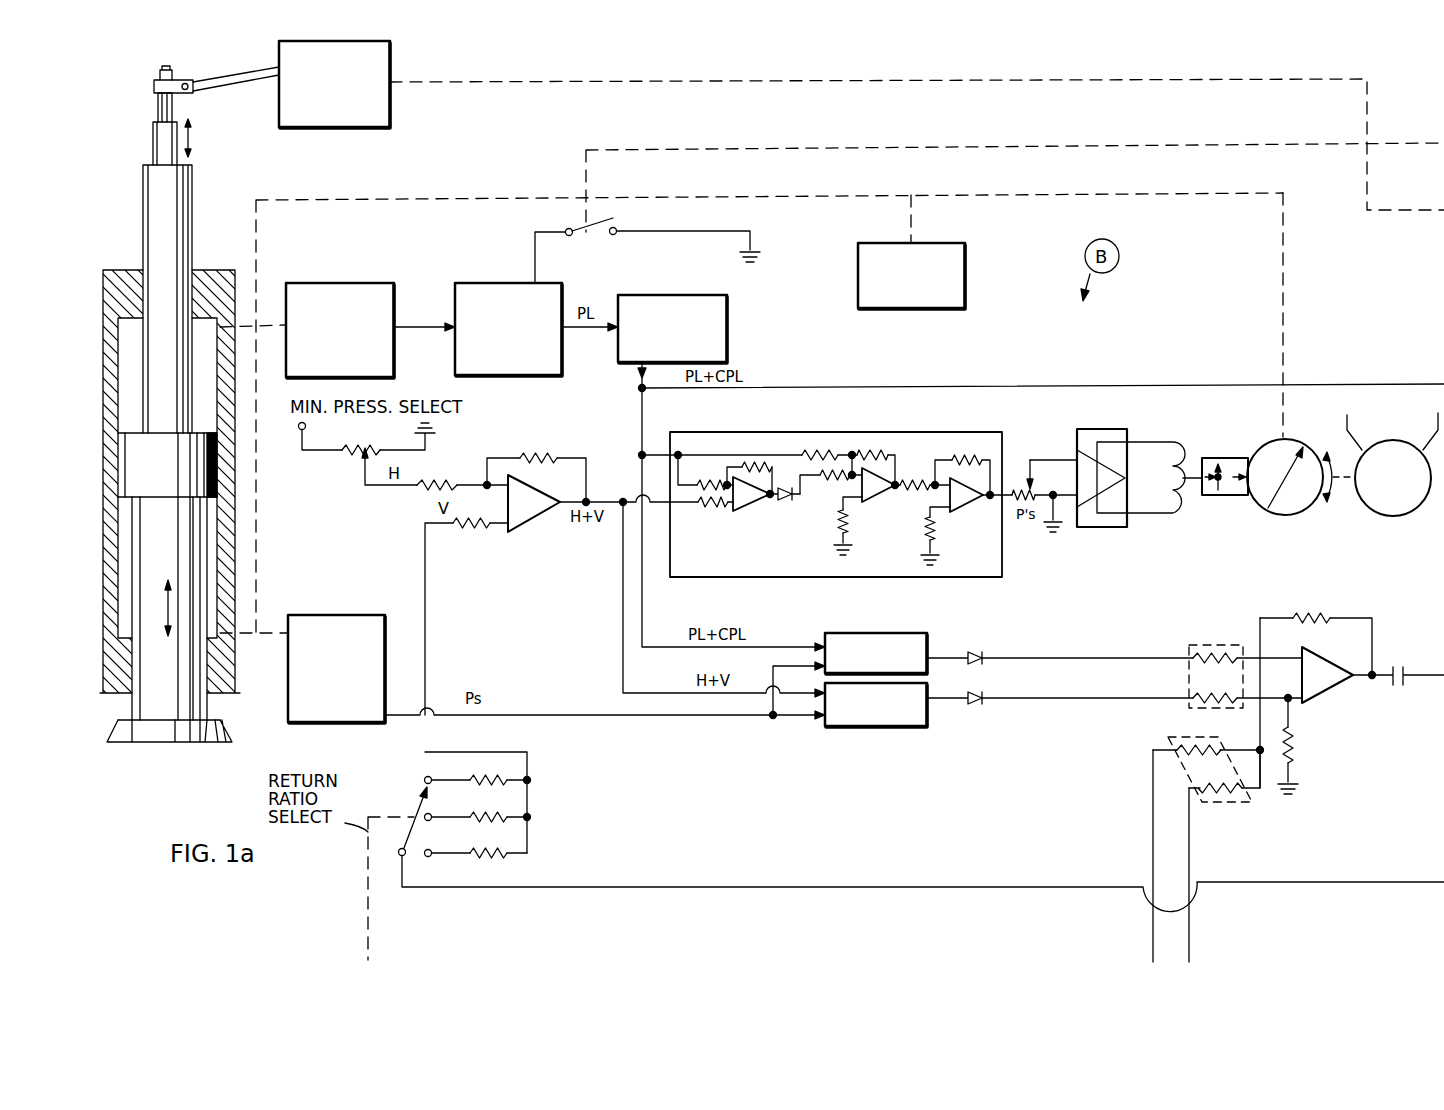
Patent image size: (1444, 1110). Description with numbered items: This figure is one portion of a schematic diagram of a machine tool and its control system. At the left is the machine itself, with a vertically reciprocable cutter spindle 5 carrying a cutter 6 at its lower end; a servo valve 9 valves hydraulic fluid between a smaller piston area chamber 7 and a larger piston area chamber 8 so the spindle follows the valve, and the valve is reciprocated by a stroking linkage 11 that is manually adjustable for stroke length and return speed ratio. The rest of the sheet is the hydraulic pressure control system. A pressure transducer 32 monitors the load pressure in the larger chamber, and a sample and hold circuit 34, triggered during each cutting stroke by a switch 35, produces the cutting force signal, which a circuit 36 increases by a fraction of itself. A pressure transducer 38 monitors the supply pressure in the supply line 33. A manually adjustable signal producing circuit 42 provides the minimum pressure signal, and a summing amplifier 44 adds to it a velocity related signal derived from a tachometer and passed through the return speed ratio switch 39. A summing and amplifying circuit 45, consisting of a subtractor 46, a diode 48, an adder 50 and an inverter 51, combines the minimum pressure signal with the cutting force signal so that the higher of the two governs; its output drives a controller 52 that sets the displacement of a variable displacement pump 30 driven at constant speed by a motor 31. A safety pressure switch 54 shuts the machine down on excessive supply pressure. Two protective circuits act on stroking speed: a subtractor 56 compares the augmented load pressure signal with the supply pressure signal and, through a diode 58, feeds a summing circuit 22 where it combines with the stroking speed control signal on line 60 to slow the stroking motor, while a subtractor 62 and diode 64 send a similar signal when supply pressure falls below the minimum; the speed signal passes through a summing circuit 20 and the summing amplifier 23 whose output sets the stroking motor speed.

The cutter spindle 5 is at (133, 710).
The cutter 6 is at (128, 742).
The smaller piston area chamber 7 is at (123, 565).
The larger piston area chamber 8 is at (125, 372).
The servo valve 9 is at (153, 147).
The stroking linkage 11 is at (342, 41).
The summing circuit 20 is at (1210, 806).
The summing circuit 22 is at (1222, 646).
The summing amplifier 23 is at (1352, 658).
The variable displacement pump 30 is at (1289, 477).
The motor 31 is at (1392, 464).
The pressure transducer 32 is at (340, 330).
The supply line 33 is at (1283, 302).
The sample and hold circuit 34 is at (508, 329).
The switch 35 is at (585, 236).
The circuit 36 is at (670, 295).
The pressure transducer 38 is at (336, 669).
The return speed ratio switch 39 is at (505, 862).
The manually adjustable signal producing circuit 42 is at (350, 462).
The summing amplifier 44 is at (538, 492).
The summing and amplifying circuit 45 is at (860, 432).
The subtractor 46 is at (757, 514).
The diode 48 is at (785, 504).
The adder 50 is at (880, 500).
The inverter 51 is at (968, 514).
The controller 52 is at (1100, 429).
The safety pressure switch 54 is at (965, 275).
The subtractor 56 is at (876, 653).
The diode 58 is at (975, 650).
The line 60 is at (1260, 732).
The subtractor 62 is at (876, 705).
The diode 64 is at (975, 705).